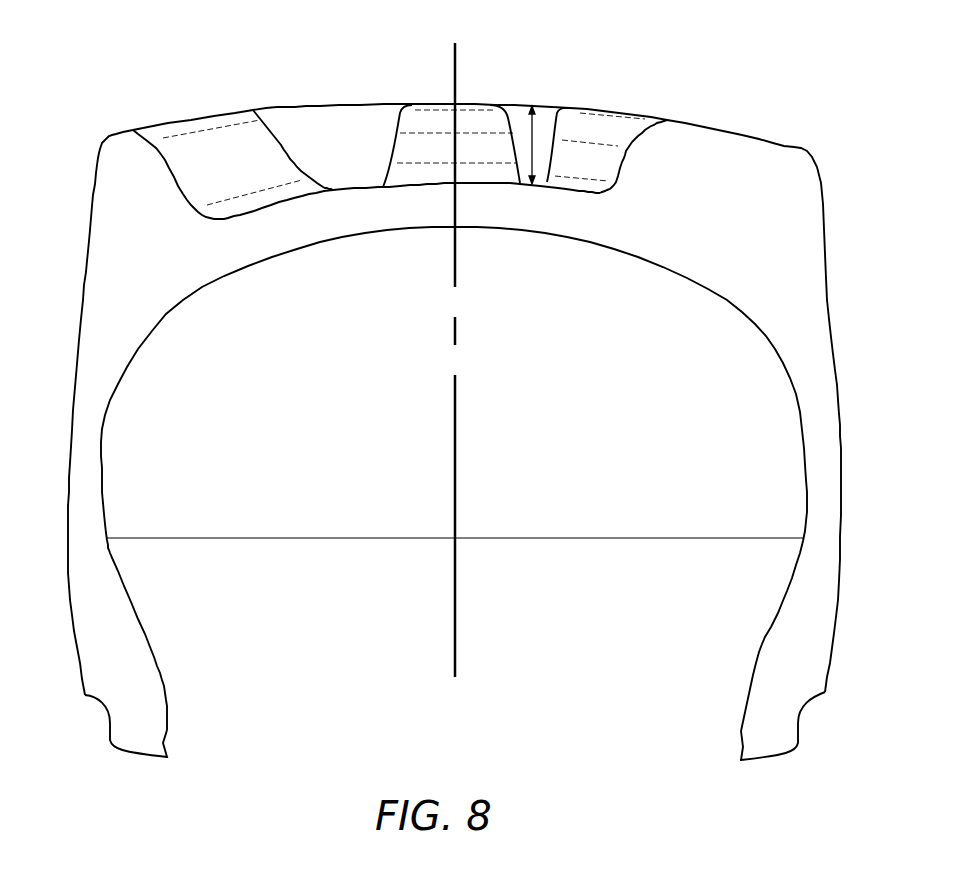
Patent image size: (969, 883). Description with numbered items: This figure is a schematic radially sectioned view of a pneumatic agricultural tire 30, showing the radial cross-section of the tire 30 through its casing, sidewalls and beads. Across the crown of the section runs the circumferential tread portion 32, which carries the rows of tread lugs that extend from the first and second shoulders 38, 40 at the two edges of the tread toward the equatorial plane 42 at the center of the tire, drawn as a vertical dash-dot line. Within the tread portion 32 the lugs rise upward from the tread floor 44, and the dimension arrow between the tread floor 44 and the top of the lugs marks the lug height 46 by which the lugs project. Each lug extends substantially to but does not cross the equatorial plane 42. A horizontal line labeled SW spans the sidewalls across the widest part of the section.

The pneumatic agricultural tire 30 is at (757, 91).
The circumferential tread portion 32 is at (353, 188).
The tread floor 44 is at (353, 188).
The first shoulder 38 is at (848, 178).
The second shoulder 40 is at (75, 162).
The equatorial plane 42 is at (458, 80).
The lug height 46 is at (531, 118).
The section width SW is at (410, 540).